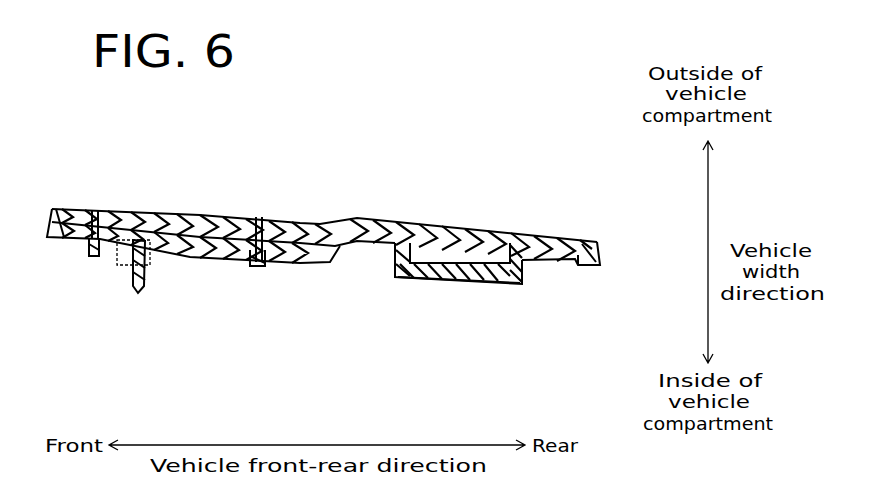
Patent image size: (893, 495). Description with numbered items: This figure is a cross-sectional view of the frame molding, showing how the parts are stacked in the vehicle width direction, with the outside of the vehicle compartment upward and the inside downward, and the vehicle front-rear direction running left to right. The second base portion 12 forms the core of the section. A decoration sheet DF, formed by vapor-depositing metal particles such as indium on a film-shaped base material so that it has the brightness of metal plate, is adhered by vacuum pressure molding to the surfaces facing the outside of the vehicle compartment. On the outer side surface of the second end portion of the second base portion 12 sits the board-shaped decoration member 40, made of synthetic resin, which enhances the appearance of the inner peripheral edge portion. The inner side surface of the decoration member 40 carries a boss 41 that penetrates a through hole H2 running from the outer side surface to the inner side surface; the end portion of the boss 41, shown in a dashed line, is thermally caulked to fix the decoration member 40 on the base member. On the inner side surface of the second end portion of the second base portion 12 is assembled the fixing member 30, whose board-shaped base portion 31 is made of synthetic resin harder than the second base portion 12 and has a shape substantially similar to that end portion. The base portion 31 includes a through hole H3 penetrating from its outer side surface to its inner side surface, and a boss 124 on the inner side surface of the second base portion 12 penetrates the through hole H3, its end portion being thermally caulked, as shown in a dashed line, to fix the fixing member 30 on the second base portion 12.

The decoration member 40 is at (233, 216).
The decoration sheet DF is at (493, 228).
The fixing member 30 is at (452, 284).
The base portion 31 is at (413, 279).
The second base portion 12 is at (590, 266).
The through hole H2 is at (85, 243).
The boss 41 is at (93, 257).
The boss 124 is at (137, 294).
The through hole H3 is at (150, 265).